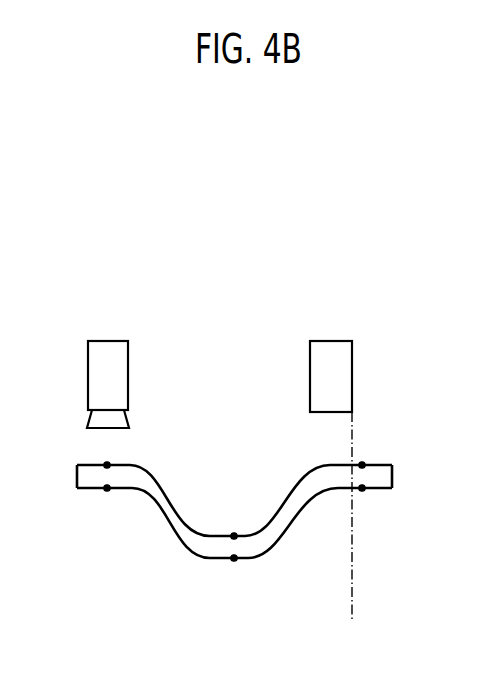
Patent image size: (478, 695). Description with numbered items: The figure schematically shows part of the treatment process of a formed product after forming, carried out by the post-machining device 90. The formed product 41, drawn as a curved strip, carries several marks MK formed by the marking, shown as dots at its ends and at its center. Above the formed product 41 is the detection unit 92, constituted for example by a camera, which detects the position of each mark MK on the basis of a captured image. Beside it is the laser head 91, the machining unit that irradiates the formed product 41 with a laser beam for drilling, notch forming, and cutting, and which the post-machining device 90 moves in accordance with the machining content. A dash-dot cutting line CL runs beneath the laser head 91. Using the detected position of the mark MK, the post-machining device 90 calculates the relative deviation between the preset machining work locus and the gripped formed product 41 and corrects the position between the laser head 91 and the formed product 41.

The post-machining device 90 is at (200, 306).
The laser head 91 is at (330, 349).
The detection unit 92 is at (106, 349).
The formed product 41 is at (173, 502).
The mark MK is at (107, 465).
The cutting line CL is at (353, 585).